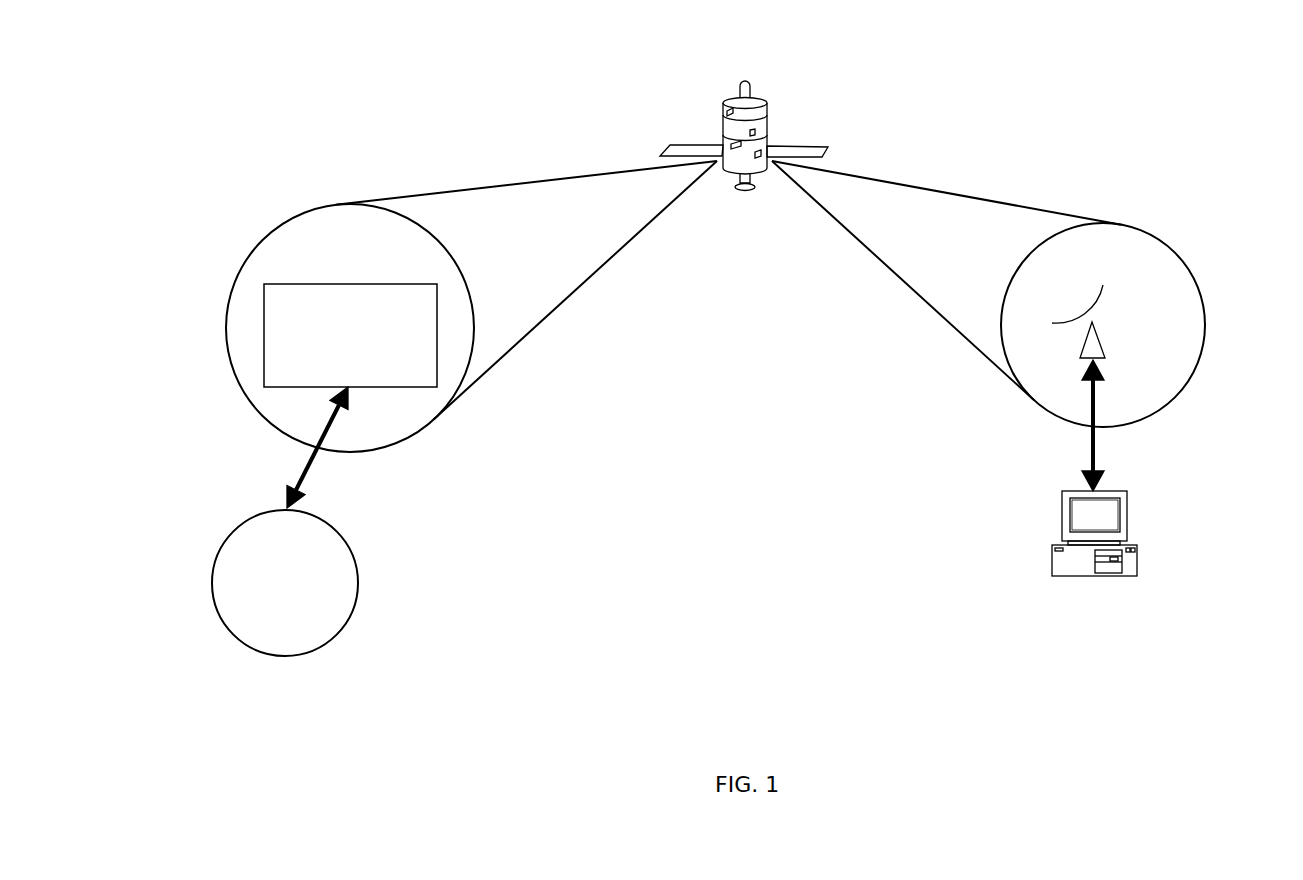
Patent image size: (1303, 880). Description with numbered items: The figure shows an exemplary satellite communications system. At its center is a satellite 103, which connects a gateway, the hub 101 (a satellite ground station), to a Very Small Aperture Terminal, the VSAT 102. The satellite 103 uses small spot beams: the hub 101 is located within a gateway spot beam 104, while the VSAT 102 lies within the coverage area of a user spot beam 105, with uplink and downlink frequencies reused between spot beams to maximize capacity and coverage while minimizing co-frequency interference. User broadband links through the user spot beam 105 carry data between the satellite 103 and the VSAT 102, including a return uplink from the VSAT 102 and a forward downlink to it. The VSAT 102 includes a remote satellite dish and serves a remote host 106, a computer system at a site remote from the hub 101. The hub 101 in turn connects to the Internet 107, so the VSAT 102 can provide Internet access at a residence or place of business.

The hub 101 is at (290, 284).
The Very Small Aperture Terminal (VSAT) 102 is at (1102, 335).
The satellite 103 is at (765, 102).
The gateway spot beam 104 is at (337, 203).
The user spot beam 105 is at (1150, 232).
The remote host 106 is at (1130, 576).
The Internet 107 is at (227, 628).